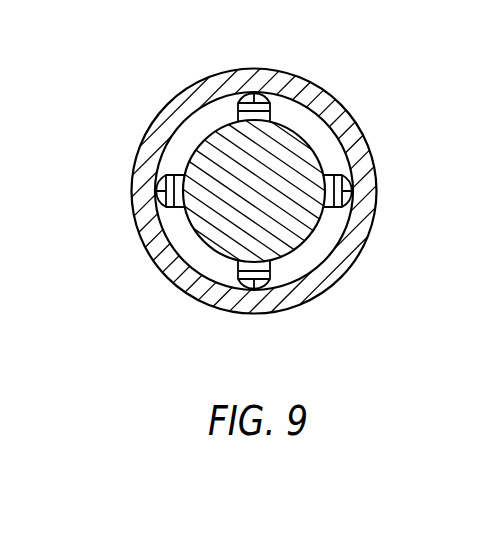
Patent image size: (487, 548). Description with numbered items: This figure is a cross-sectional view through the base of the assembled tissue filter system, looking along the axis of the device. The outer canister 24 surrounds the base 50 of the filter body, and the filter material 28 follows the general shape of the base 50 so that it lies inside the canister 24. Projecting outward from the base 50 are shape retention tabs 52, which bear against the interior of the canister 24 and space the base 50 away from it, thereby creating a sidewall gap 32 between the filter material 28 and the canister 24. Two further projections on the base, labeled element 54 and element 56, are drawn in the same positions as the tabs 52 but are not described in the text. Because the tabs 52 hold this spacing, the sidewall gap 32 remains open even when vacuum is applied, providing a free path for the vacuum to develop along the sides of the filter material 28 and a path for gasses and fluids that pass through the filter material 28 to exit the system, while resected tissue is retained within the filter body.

The canister 24 is at (363, 135).
The filter material 28 is at (347, 113).
The sidewall gap 32 is at (187, 130).
The base 50 is at (252, 213).
The shape retention tab 52 is at (166, 192).
The top tab 54 is at (255, 94).
The bottom tab 56 is at (254, 281).